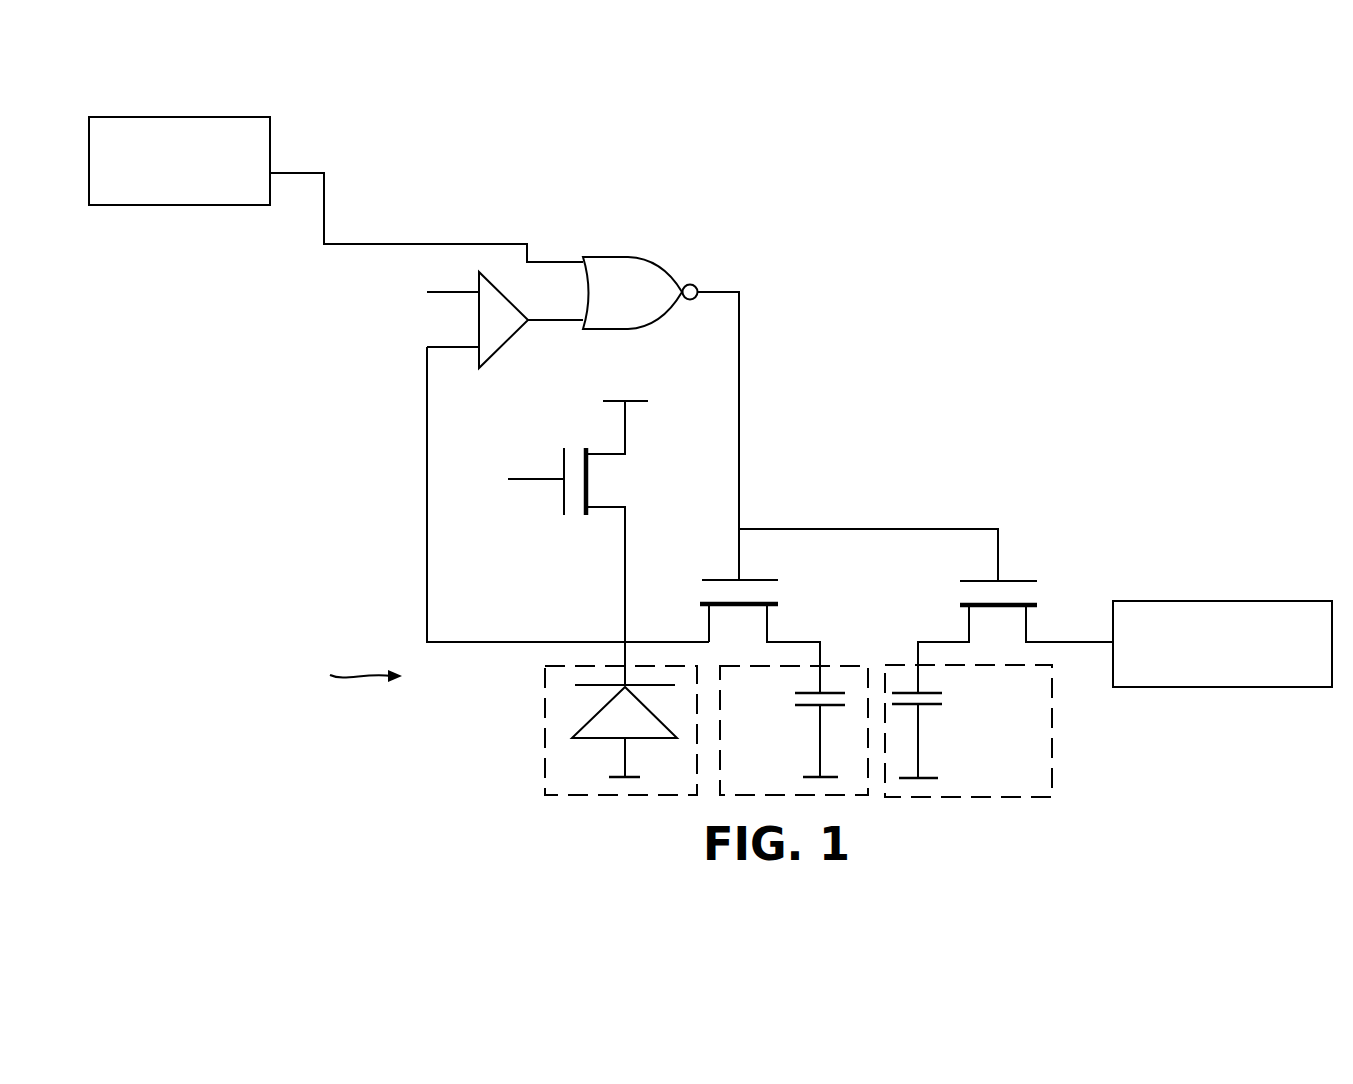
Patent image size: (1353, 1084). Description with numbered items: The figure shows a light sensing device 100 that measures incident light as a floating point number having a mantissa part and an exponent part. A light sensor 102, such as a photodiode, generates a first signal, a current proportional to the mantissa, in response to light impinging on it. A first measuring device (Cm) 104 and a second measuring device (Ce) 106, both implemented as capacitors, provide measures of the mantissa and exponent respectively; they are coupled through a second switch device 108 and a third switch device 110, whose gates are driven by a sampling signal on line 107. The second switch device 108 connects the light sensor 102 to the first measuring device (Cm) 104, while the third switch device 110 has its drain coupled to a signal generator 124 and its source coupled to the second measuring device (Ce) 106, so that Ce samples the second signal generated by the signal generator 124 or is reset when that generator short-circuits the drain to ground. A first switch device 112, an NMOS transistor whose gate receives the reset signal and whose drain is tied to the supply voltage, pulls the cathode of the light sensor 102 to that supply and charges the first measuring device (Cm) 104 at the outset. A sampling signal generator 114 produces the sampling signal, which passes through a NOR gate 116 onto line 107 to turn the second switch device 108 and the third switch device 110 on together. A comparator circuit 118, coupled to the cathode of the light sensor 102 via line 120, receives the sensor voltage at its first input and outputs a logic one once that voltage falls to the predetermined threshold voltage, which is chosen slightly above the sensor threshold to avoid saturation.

The light sensing device 100 is at (1072, 342).
The light sensor 102 is at (545, 781).
The first measuring device (Cm) 104 is at (832, 660).
The second measuring device (Ce) 106 is at (1052, 683).
The line 107 is at (739, 400).
The second switch device 108 is at (708, 601).
The third switch device 110 is at (1030, 601).
The first switch device 112 is at (585, 512).
The sampling signal generator 114 is at (177, 205).
The NOR gate 116 is at (643, 274).
The comparator circuit 118 is at (479, 327).
The line 120 is at (427, 503).
The signal generator 124 is at (1296, 601).